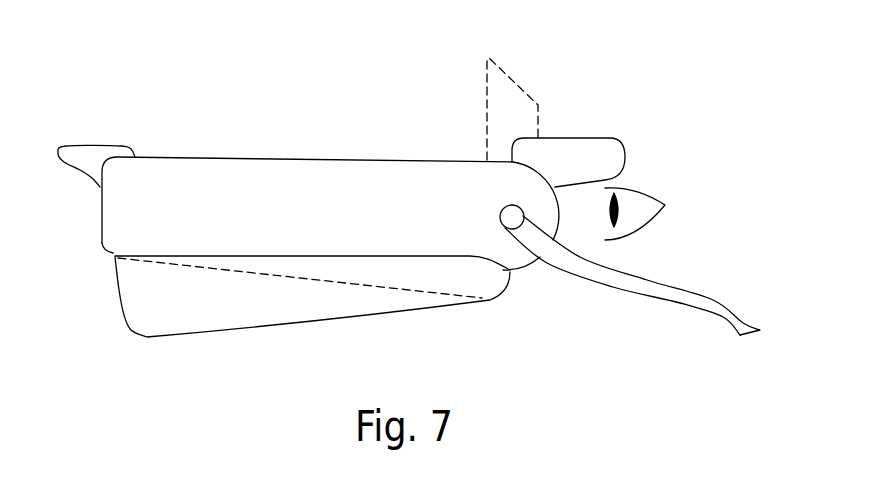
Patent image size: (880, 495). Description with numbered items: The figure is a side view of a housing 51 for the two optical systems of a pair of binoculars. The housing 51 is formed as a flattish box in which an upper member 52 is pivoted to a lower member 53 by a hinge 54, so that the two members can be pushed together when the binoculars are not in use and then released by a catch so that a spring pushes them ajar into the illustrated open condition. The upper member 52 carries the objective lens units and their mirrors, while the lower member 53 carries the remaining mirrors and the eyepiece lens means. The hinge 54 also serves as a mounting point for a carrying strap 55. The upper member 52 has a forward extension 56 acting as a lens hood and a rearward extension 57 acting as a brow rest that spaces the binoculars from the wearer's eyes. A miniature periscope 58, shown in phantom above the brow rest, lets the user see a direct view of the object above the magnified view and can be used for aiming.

The housing 51 is at (300, 152).
The upper member 52 is at (193, 210).
The lower member 53 is at (315, 305).
The hinge 54 is at (510, 212).
The carrying strap 55 is at (697, 300).
The forward extension 56 is at (85, 155).
The rearward extension 57 is at (590, 147).
The miniature periscope 58 is at (527, 90).